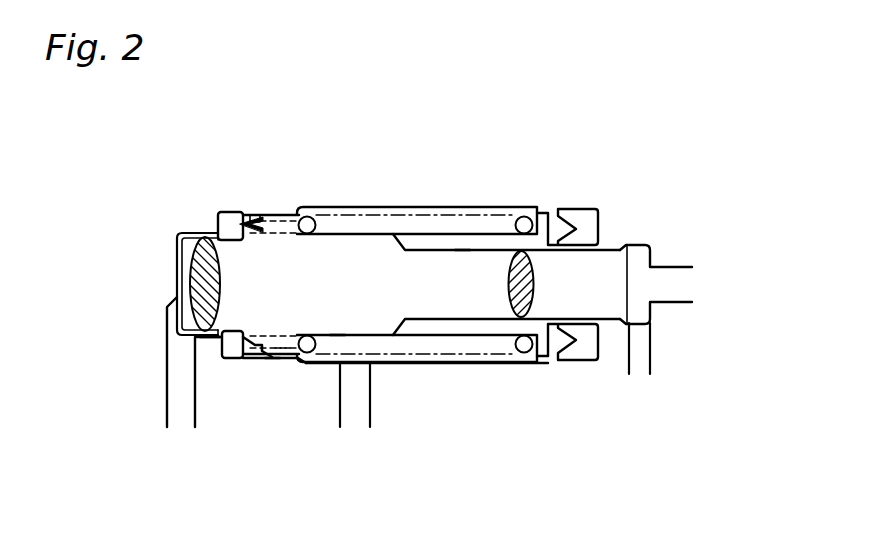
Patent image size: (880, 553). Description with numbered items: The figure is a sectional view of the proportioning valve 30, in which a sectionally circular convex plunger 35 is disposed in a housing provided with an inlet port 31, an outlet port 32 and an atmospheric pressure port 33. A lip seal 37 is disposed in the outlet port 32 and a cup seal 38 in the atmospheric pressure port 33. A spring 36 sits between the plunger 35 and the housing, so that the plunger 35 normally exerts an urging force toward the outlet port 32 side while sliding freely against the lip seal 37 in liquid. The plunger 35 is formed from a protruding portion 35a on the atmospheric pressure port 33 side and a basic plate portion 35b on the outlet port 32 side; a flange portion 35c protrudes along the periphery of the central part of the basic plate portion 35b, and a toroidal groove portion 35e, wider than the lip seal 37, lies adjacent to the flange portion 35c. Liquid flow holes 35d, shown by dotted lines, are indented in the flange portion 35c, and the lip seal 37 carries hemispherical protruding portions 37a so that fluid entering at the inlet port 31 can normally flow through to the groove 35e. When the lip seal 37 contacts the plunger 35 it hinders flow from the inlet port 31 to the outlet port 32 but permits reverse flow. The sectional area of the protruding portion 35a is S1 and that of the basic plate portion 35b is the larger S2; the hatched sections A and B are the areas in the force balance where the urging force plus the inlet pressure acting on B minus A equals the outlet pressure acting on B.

The proportioning valve 30 is at (580, 128).
The inlet port 31 is at (354, 423).
The outlet port 32 is at (183, 425).
The atmospheric pressure port 33 is at (687, 283).
The plunger 35 is at (273, 247).
The protruding portion 35a is at (460, 280).
The basic plate portion 35b is at (338, 290).
The flange portion 35c is at (272, 360).
The liquid flow holes 35d is at (281, 360).
The groove portion 35e is at (210, 352).
The spring 36 is at (465, 216).
The lip seal 37 is at (246, 216).
The hemispherical protruding portions 37a is at (260, 360).
The cup seal 38 is at (584, 224).
The pressure-receiving area A is at (513, 281).
The pressure-receiving area B is at (205, 275).
The sectional area of protruding portion S1 is at (555, 285).
The sectional area of basic plate portion S2 is at (240, 285).